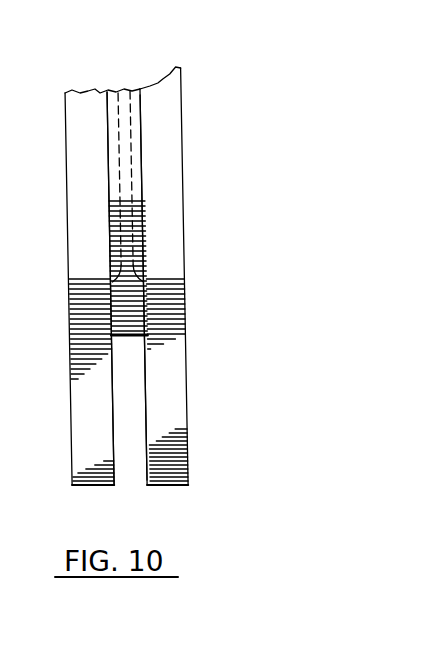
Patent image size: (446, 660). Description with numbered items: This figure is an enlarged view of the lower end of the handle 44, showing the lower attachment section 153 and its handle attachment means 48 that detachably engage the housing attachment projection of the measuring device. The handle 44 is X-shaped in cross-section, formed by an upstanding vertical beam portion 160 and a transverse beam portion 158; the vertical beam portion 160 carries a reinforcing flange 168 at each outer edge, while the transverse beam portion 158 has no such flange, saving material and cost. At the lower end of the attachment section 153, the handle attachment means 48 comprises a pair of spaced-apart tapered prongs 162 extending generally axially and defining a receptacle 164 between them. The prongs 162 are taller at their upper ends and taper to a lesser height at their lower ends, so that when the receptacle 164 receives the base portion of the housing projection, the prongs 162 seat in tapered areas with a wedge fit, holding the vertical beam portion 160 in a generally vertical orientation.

The handle 44 is at (101, 70).
The handle attachment means 48 is at (193, 316).
The lower attachment section 153 is at (191, 115).
The transverse beam portion 158 is at (163, 170).
The vertical beam portion 160 is at (121, 133).
The tapered prongs 162 is at (173, 403).
The receptacle 164 is at (130, 371).
The reinforcing flange 168 is at (147, 109).